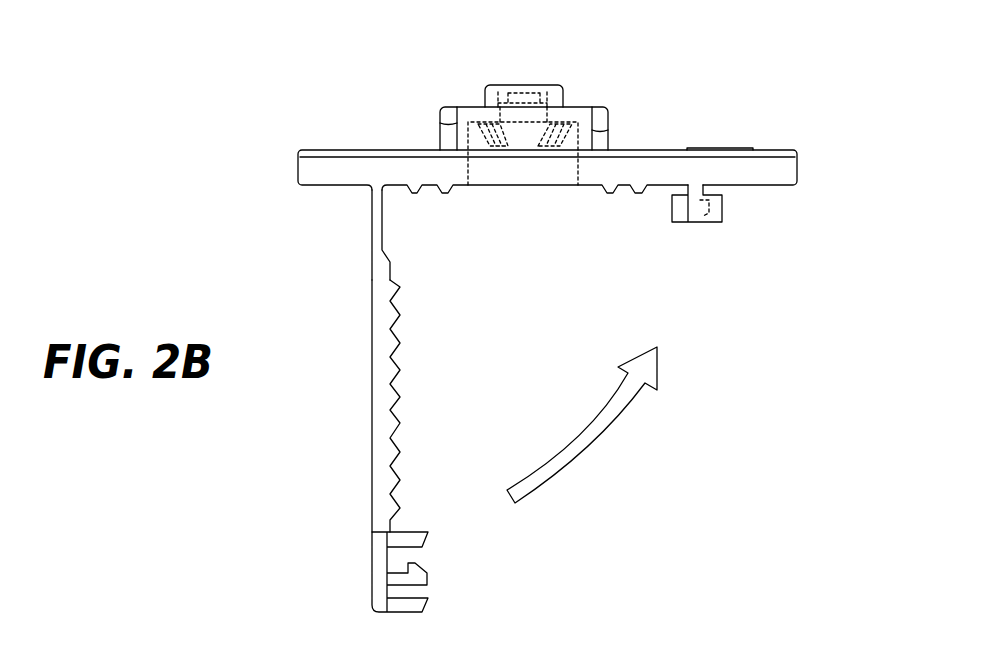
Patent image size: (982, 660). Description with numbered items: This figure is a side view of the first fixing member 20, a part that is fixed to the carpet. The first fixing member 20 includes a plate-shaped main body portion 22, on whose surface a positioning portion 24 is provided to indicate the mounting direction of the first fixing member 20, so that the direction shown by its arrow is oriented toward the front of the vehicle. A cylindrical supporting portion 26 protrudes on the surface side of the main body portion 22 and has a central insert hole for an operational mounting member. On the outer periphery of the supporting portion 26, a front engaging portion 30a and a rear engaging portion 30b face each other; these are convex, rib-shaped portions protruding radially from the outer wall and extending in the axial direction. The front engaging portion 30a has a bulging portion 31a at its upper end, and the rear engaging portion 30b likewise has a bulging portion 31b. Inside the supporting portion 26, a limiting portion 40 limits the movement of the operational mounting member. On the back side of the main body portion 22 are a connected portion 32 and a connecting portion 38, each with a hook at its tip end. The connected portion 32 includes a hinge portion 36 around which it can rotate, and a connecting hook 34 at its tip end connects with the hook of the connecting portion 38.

The first fixing member 20 is at (660, 513).
The main body portion 22 is at (779, 156).
The positioning portion 24 is at (736, 148).
The supporting portion 26 is at (577, 110).
The front engaging portion 30a is at (607, 131).
The rear engaging portion 30b is at (441, 131).
The bulging portion 31a is at (600, 108).
The bulging portion 31b is at (445, 108).
The connected portion 32 is at (383, 424).
The connecting hook 34 is at (427, 572).
The hinge portion 36 is at (372, 216).
The connecting portion 38 is at (707, 218).
The limiting portion 40 is at (483, 138).